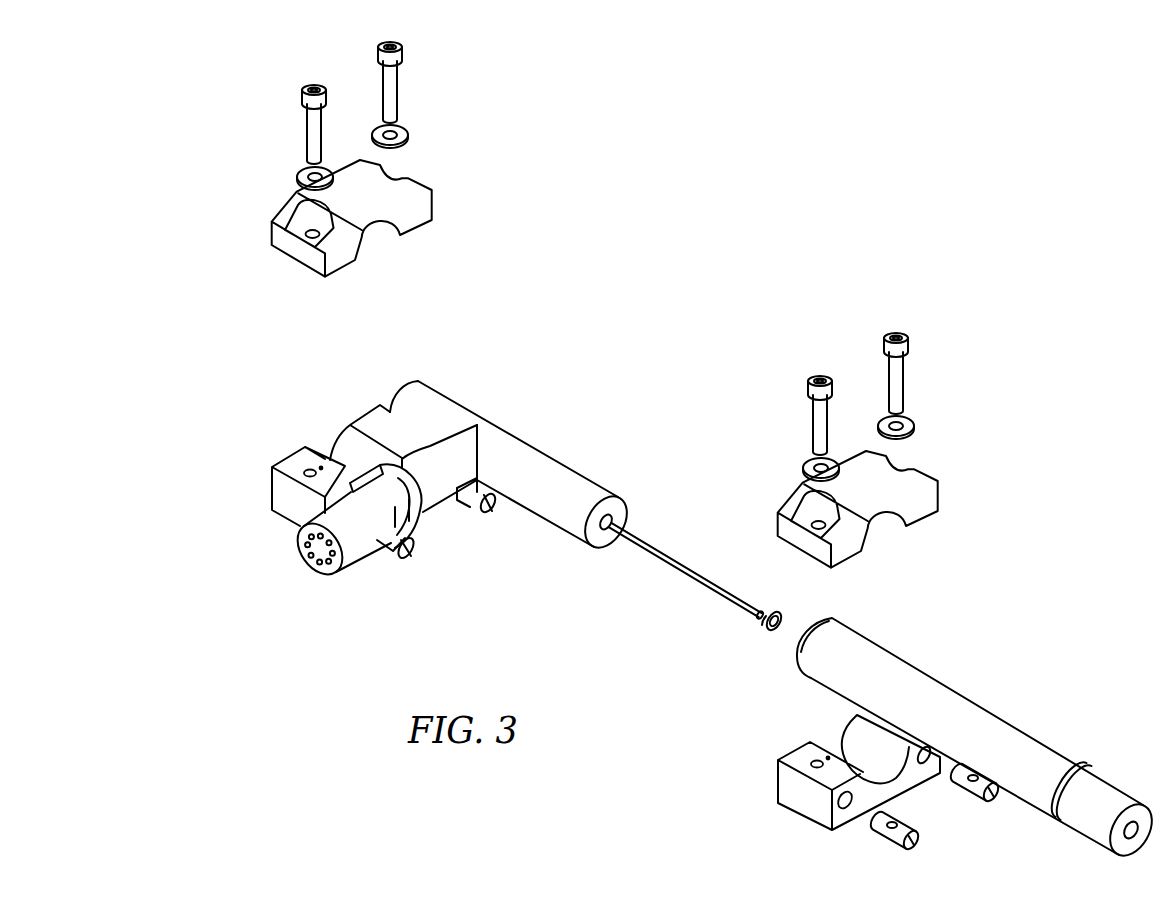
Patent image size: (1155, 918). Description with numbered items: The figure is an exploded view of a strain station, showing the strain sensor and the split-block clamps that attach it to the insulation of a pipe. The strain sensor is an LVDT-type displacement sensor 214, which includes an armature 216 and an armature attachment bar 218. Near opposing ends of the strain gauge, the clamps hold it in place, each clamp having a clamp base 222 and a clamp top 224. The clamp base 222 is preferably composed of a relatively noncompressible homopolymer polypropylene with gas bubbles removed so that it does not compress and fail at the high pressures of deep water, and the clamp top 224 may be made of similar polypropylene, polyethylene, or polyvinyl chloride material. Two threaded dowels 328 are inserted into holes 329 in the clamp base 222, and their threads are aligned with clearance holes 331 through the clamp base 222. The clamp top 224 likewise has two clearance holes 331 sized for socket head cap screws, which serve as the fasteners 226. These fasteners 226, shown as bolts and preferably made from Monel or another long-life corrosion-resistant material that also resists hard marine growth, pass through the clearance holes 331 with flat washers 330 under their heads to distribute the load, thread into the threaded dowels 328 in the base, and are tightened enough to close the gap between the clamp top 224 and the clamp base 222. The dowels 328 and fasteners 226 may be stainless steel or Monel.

The displacement sensor 214 is at (565, 462).
The armature 216 is at (700, 590).
The armature attachment bar 218 is at (960, 690).
The clamp base 222 is at (282, 518).
The clamp top 224 is at (282, 257).
The fasteners 226 is at (380, 102).
The threaded dowels 328 is at (420, 537).
The holes 329 is at (847, 810).
The washers 330 is at (408, 141).
The clearance holes 331 is at (307, 230).